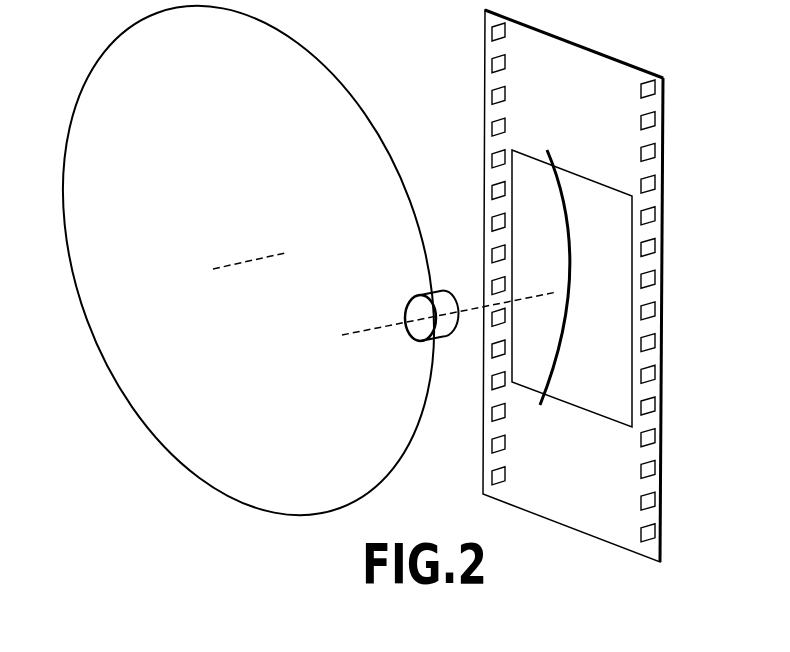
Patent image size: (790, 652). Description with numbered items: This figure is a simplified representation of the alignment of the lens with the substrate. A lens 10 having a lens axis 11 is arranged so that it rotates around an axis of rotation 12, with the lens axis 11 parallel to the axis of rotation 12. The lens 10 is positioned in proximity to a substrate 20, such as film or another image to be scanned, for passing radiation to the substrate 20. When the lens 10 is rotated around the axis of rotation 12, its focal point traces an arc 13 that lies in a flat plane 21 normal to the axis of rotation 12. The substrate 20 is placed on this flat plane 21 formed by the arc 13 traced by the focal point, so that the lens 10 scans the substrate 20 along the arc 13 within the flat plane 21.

The lens 10 is at (445, 342).
The lens axis 11 is at (363, 328).
The axis of rotation 12 is at (242, 260).
The arc 13 is at (573, 250).
The substrate 20 is at (617, 463).
The flat plane 21 is at (615, 338).